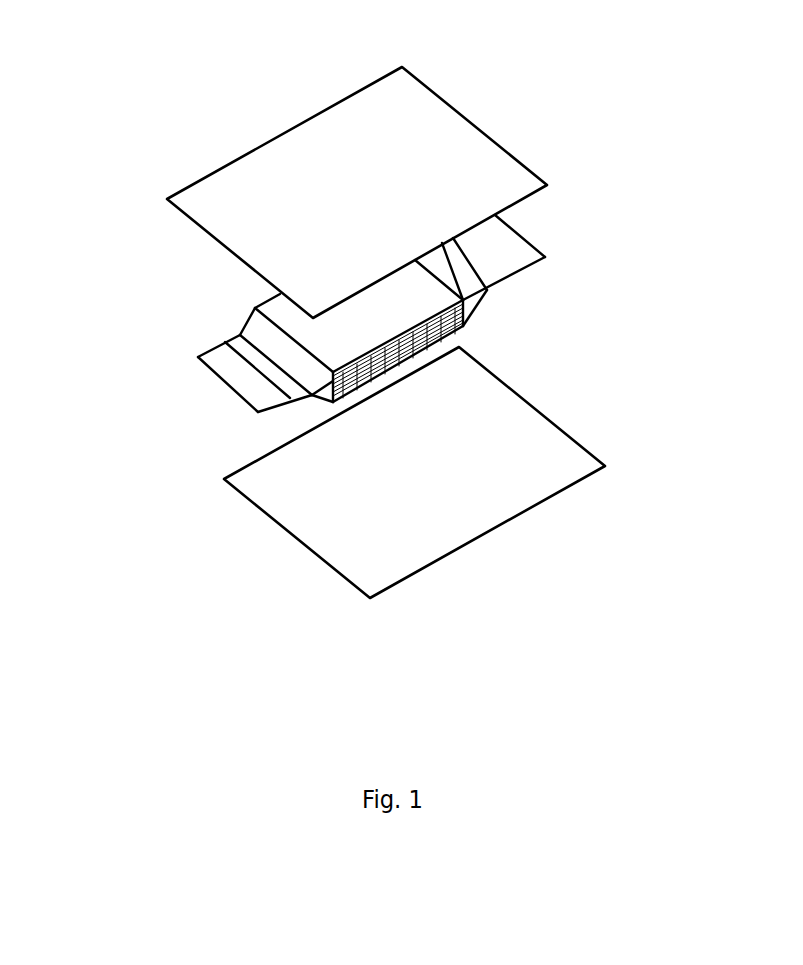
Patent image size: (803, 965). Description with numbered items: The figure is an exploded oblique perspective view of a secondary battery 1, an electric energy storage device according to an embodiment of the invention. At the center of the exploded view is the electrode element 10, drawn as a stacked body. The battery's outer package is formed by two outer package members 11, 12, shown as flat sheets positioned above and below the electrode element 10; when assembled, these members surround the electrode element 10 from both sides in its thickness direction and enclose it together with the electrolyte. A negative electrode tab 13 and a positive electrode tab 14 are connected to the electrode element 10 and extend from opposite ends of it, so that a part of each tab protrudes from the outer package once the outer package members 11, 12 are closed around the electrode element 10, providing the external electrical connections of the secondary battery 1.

The secondary battery 1 is at (192, 478).
The electrode element 10 is at (258, 295).
The outer package member 11 is at (428, 123).
The outer package member 12 is at (528, 443).
The negative electrode tab 13 is at (525, 248).
The positive electrode tab 14 is at (225, 370).